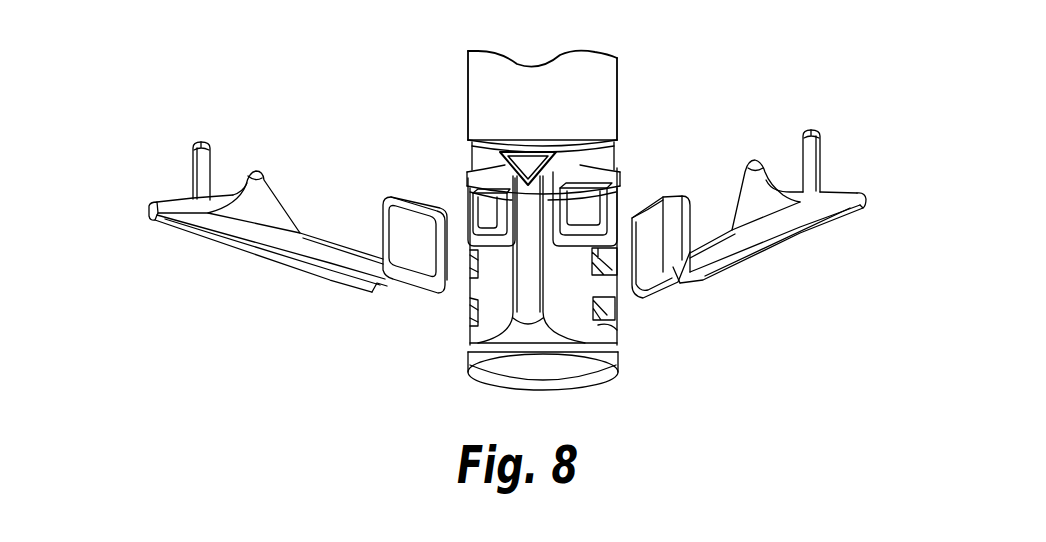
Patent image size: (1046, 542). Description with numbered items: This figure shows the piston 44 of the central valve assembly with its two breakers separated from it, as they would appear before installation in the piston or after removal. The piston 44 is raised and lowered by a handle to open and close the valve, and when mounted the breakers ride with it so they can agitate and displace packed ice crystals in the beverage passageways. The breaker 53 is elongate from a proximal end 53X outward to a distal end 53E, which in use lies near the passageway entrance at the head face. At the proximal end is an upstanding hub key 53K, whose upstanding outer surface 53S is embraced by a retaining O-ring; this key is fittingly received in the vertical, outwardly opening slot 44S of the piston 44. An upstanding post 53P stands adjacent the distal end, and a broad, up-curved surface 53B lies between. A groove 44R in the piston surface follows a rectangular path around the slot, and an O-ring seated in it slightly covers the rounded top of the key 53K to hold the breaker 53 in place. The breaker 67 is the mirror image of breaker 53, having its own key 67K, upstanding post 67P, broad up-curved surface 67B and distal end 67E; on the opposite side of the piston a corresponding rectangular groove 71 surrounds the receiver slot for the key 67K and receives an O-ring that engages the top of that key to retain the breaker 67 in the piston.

The piston 44 is at (603, 90).
The groove 44R is at (585, 183).
The slot 44S is at (613, 313).
The groove 71 is at (470, 192).
The breaker 53 is at (786, 202).
The broad and up-curved surface 53B is at (750, 170).
The distal end 53E is at (866, 196).
The hub key portion 53K is at (650, 237).
The upstanding post 53P is at (821, 151).
The upstanding outer surface 53S is at (678, 192).
The proximal end 53X is at (622, 283).
The breaker 67 is at (258, 215).
The broad and up-curved surface 67B is at (266, 182).
The distal end 67E is at (149, 207).
The key portion 67K is at (413, 240).
The upstanding post 67P is at (196, 158).